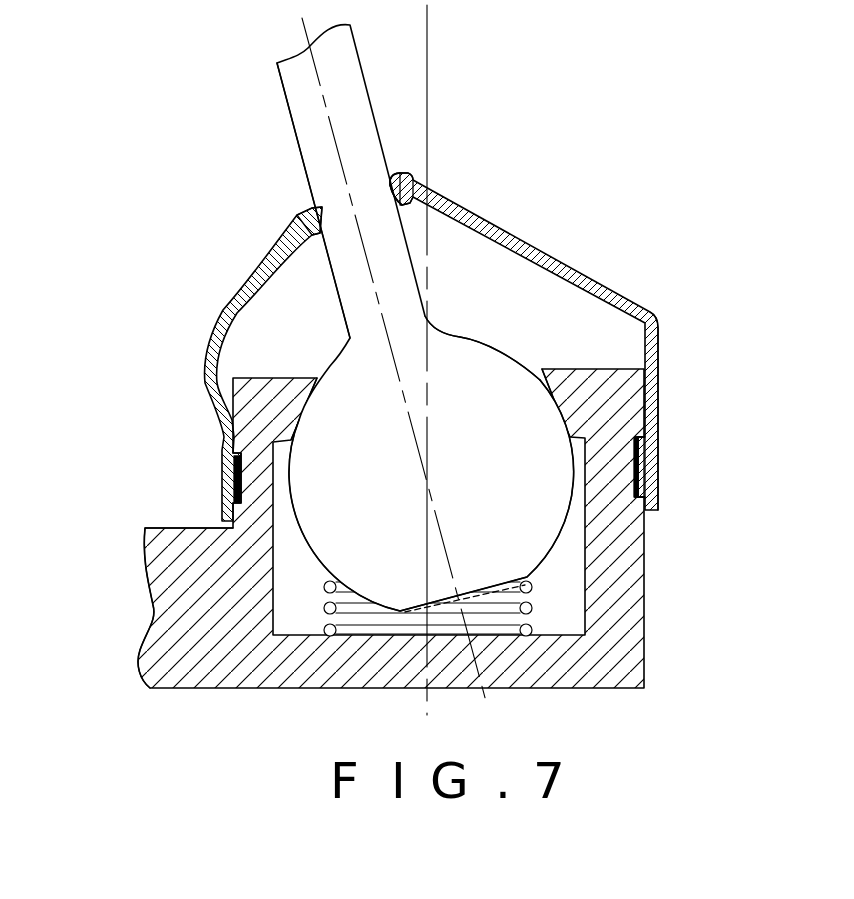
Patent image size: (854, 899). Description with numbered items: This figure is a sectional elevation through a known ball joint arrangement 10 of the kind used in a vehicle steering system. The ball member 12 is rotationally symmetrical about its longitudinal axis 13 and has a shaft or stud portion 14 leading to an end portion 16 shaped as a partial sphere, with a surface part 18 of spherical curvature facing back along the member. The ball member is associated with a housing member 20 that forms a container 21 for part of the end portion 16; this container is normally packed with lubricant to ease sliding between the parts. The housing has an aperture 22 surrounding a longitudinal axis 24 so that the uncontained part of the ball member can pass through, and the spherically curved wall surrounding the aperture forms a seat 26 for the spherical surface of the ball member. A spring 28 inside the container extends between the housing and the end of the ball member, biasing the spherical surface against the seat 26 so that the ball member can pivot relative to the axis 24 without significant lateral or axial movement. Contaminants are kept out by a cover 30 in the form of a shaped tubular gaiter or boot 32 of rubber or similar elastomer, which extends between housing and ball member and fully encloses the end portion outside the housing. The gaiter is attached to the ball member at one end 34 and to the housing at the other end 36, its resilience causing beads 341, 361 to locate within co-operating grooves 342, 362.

The ball joint arrangement 10 is at (402, 360).
The ball member 12 is at (450, 361).
The longitudinal axis 13 is at (308, 43).
The shaft or stud portion 14 is at (283, 90).
The end portion 16 is at (510, 480).
The surface part 18 is at (485, 342).
The housing member 20 is at (157, 520).
The container 21 is at (268, 565).
The aperture 22 is at (318, 362).
The longitudinal axis 24 is at (428, 74).
The seat 26 is at (522, 368).
The spring 28 is at (533, 602).
The cover 30 is at (491, 313).
The gaiter or boot 32 is at (607, 284).
The gaiter end 34 is at (410, 175).
The bead 341 is at (383, 187).
The groove 342 is at (320, 207).
The gaiter end 36 is at (657, 498).
The bead 361 is at (657, 462).
The groove 362 is at (655, 505).